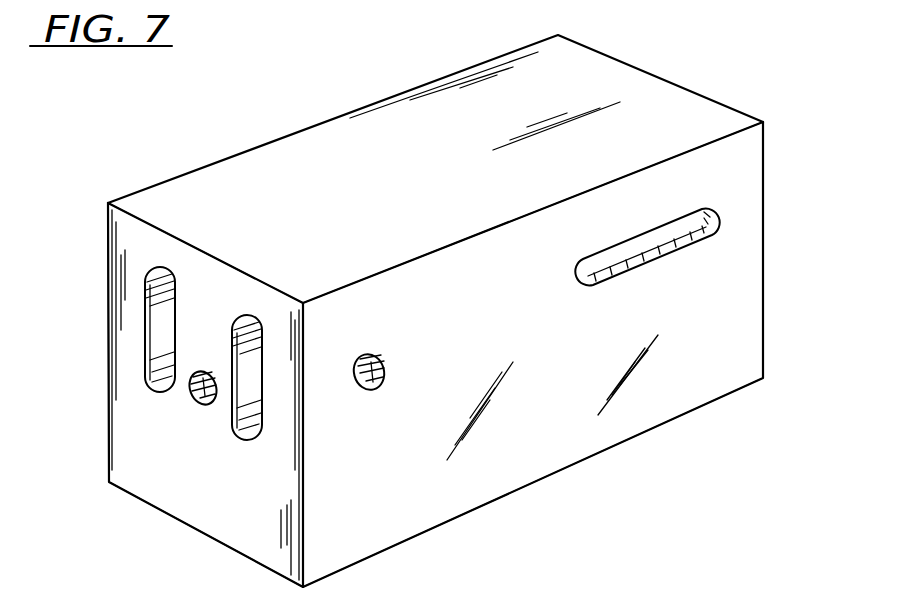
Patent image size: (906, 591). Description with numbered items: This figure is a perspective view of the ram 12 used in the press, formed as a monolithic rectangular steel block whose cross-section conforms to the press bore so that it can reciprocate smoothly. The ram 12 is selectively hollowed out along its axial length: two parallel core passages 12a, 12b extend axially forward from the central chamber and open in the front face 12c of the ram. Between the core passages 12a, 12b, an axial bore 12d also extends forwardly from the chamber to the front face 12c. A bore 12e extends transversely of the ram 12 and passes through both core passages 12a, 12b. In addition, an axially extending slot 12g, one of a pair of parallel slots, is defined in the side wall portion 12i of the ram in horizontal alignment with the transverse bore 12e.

The ram 12 is at (317, 178).
The core passage 12a is at (160, 318).
The core passage 12b is at (235, 430).
The front face 12c is at (173, 466).
The axial bore 12d is at (195, 403).
The transverse bore 12e is at (364, 392).
The slot 12g is at (645, 240).
The side wall portion 12i is at (563, 376).